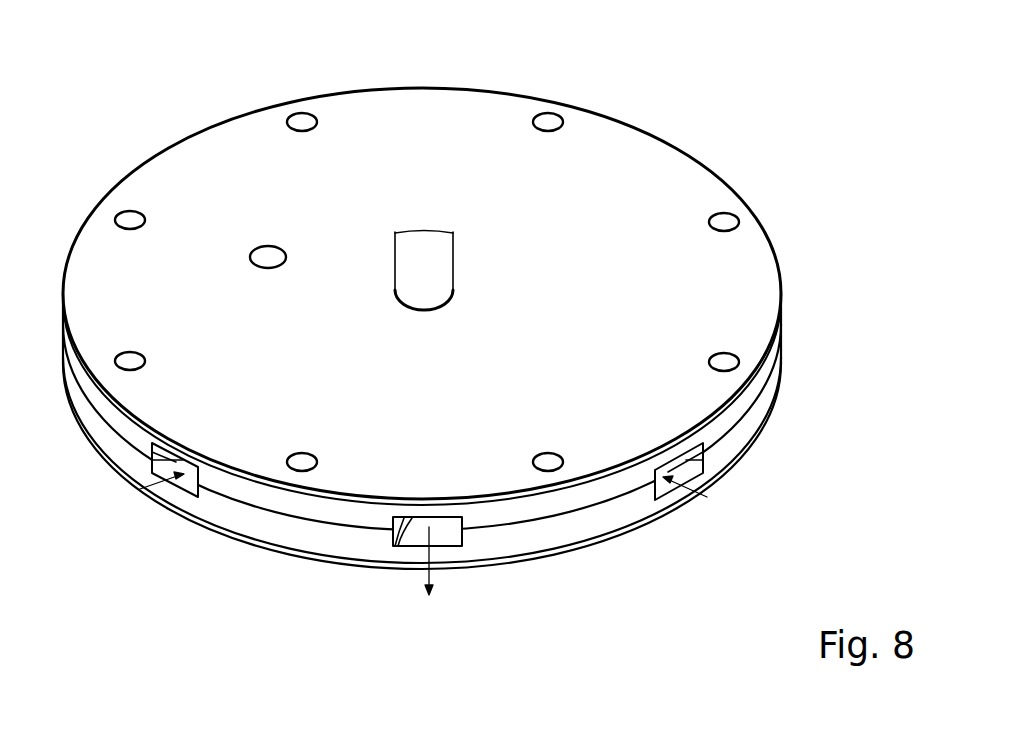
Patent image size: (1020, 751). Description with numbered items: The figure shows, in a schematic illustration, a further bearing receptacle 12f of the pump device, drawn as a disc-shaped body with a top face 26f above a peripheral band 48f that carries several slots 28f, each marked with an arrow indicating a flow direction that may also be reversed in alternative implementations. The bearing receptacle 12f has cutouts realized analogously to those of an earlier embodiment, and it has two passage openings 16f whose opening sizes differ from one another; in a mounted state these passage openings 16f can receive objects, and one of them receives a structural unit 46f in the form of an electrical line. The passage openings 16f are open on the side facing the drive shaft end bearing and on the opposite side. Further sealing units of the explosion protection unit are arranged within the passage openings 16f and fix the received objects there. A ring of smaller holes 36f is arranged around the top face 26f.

The bearing receptacle 12f is at (478, 318).
The passage openings 16f is at (269, 257).
The top plate 26f is at (647, 173).
The slot 28f is at (724, 471).
The bolt hole 36f is at (549, 121).
The structural unit 46f is at (423, 292).
The ring band 48f is at (582, 544).